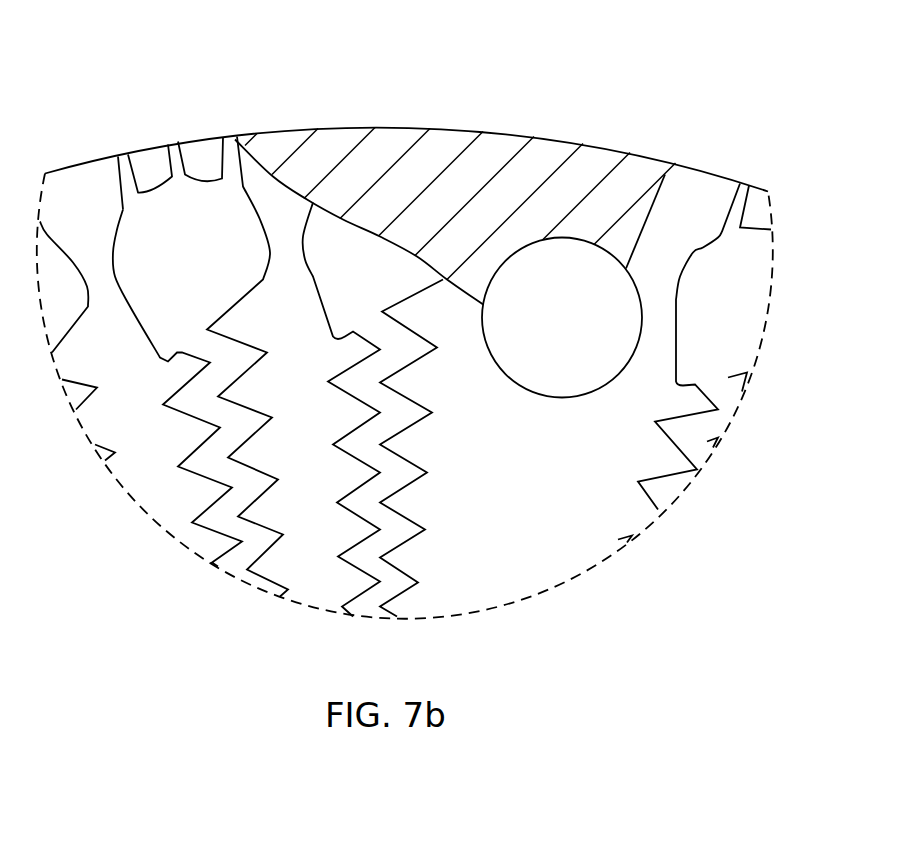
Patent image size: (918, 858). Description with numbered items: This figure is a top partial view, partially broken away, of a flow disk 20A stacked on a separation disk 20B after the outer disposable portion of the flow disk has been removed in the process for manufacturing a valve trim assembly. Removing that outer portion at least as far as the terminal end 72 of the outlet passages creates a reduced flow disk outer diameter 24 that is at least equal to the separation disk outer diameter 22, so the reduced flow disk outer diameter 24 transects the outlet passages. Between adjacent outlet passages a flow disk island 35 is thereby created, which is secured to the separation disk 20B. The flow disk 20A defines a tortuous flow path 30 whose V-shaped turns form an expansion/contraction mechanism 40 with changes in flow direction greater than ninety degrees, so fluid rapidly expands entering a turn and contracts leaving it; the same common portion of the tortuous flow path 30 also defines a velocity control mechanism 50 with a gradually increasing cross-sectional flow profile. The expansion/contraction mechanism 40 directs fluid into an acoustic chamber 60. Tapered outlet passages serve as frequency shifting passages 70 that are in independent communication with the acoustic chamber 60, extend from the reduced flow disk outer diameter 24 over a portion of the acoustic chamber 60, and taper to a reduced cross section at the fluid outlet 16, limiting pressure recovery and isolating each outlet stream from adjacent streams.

The fluid outlet 16 is at (150, 84).
The flow disk 20A is at (708, 156).
The separation disk 20B is at (519, 113).
The separation disk outer diameter 22 is at (412, 127).
The reduced flow disk outer diameter 24 is at (88, 163).
The tortuous flow path 30 is at (433, 472).
The flow disk island 35 is at (150, 153).
The expansion/contraction mechanism 40 is at (407, 410).
The velocity control mechanism 50 is at (410, 524).
The acoustic chamber 60 is at (223, 283).
The frequency shifting passages 70 is at (124, 188).
The terminal end 72 is at (178, 147).